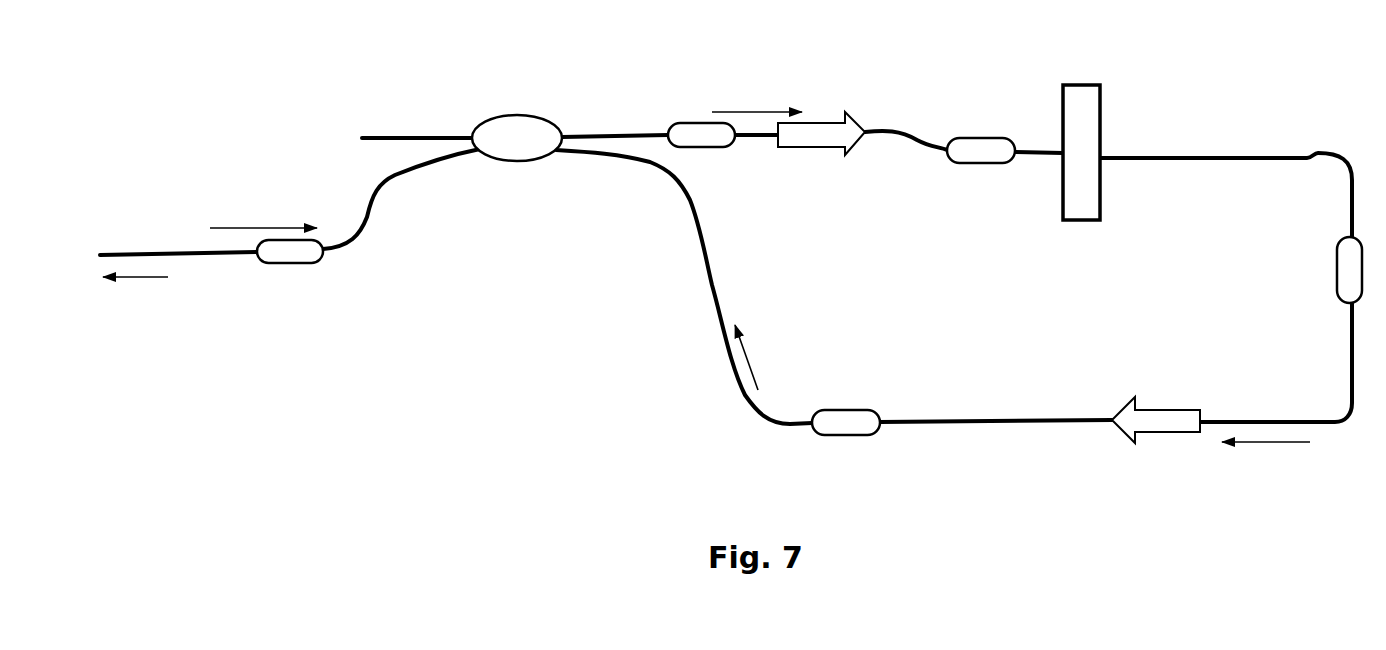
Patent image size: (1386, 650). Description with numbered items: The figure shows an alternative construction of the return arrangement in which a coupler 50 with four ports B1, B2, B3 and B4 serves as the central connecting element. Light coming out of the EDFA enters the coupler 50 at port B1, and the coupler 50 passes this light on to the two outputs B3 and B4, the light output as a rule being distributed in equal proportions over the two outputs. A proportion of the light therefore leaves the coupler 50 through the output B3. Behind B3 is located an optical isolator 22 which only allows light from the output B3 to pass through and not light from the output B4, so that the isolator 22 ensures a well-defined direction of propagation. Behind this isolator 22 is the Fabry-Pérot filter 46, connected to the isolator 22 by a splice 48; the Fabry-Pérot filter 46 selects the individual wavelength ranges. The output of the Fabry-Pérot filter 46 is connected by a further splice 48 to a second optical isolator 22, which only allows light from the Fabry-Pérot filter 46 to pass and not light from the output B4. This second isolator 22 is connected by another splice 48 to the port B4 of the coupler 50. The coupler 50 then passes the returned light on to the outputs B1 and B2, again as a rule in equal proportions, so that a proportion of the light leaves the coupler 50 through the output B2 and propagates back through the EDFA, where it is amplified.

The optical isolator 22 is at (837, 118).
The Fabry-Pérot filter 46 is at (1080, 98).
The splice 48 is at (275, 257).
The coupler 50 is at (518, 105).
The element EDFA is at (155, 252).
The port B1 is at (410, 122).
The port B2 is at (440, 210).
The port B3 is at (570, 97).
The port B4 is at (572, 210).